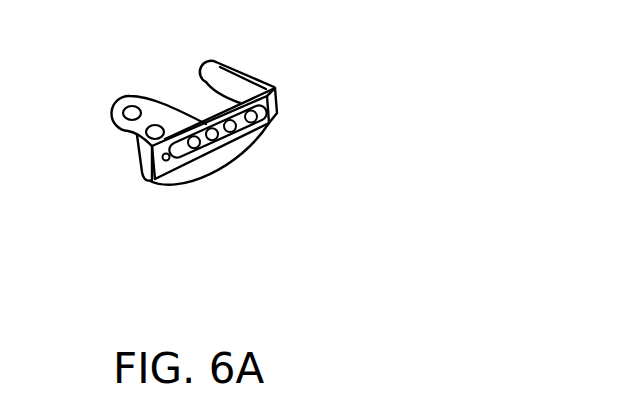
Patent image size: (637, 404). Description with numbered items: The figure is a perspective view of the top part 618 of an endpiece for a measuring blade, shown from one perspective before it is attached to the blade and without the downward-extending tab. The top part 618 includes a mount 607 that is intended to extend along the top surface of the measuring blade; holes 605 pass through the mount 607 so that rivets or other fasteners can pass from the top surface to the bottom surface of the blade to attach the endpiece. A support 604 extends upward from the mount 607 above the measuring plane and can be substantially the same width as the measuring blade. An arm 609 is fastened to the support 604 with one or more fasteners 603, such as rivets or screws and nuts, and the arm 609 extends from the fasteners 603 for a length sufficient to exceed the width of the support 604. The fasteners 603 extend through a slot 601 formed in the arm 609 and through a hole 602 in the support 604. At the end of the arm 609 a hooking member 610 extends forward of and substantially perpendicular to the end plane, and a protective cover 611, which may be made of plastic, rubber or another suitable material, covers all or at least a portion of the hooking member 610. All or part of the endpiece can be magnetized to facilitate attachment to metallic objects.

The slot 601 is at (262, 116).
The hole 602 is at (153, 165).
The fasteners 603 is at (212, 134).
The support 604 is at (201, 164).
The holes 605 is at (125, 103).
The mount 607 is at (125, 125).
The arm 609 is at (277, 98).
The hooking member 610 is at (266, 85).
The protective cover 611 is at (221, 73).
The top part 618 is at (136, 179).